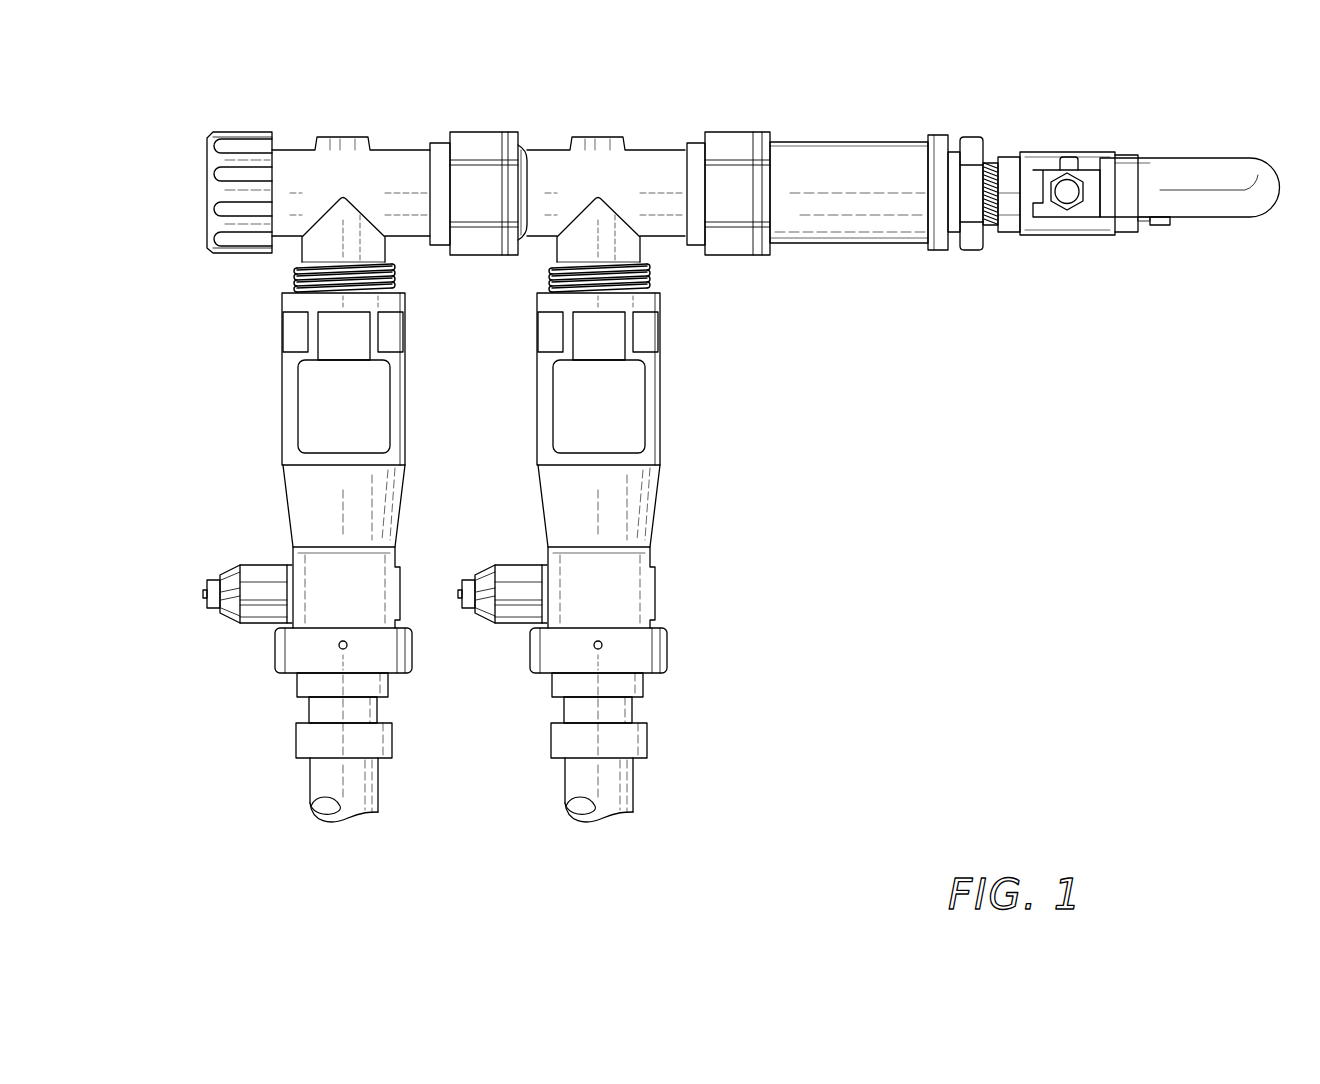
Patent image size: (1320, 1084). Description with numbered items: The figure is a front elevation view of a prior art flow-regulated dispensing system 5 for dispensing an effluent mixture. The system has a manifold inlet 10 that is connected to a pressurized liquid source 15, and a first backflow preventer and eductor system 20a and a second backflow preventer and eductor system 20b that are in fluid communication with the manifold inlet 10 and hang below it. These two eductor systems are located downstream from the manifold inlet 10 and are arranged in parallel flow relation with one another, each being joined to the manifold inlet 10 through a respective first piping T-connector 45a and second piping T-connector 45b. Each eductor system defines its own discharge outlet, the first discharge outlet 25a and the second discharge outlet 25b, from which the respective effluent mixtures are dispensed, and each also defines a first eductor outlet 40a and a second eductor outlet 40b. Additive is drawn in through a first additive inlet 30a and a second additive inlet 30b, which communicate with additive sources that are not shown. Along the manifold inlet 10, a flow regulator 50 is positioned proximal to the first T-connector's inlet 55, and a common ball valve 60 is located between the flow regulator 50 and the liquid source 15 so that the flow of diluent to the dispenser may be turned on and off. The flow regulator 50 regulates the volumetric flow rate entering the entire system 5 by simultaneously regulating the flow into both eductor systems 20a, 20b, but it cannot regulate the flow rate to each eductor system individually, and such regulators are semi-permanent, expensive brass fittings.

The flow-regulated dispensing system 5 is at (700, 480).
The manifold inlet 10 is at (567, 217).
The pressurized liquid source 15 is at (1104, 218).
The first backflow preventer and eductor system 20a is at (267, 450).
The second backflow preventer and eductor system 20b is at (531, 480).
The first discharge outlet 25a is at (338, 808).
The second discharge outlet 25b is at (593, 808).
The first additive inlet 30a is at (203, 594).
The second additive inlet 30b is at (462, 592).
The first eductor outlet 40a is at (380, 695).
The second eductor outlet 40b is at (635, 695).
The first piping T-connector 45a is at (353, 157).
The second piping T-connector 45b is at (608, 157).
The flow regulator 50 is at (862, 157).
The first T-connector's inlet 55 is at (773, 137).
The ball valve 60 is at (1046, 165).